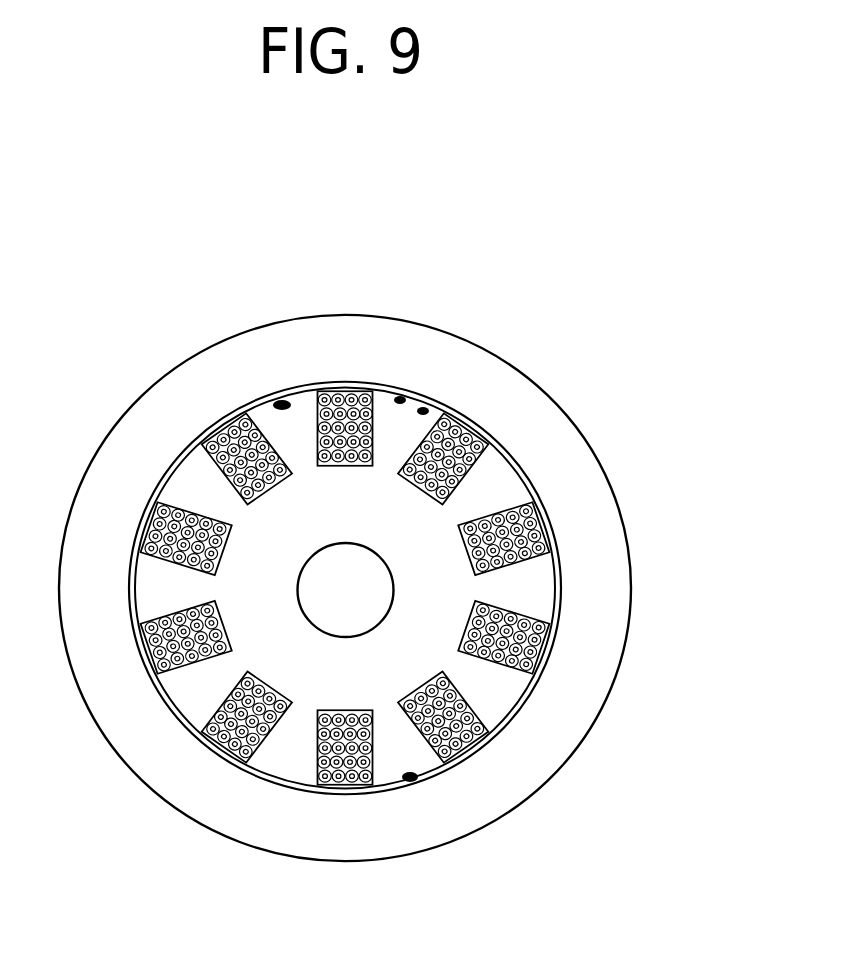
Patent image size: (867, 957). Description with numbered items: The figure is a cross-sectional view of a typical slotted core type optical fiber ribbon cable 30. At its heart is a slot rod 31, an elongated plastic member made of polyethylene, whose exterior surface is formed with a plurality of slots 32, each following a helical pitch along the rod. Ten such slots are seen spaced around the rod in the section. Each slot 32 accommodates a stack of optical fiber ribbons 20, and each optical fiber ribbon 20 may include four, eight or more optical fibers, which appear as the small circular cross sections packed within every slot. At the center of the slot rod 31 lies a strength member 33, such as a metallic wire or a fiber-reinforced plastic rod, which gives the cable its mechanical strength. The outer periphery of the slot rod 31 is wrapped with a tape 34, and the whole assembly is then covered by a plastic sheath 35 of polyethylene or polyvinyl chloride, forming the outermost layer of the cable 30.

The slotted core type optical fiber ribbon cable 30 is at (93, 343).
The slot rod 31 is at (499, 483).
The slot 32 is at (429, 752).
The strength member 33 is at (370, 596).
The tape 34 is at (527, 708).
The plastic sheath 35 is at (501, 397).
The optical fiber ribbon 20 is at (476, 753).